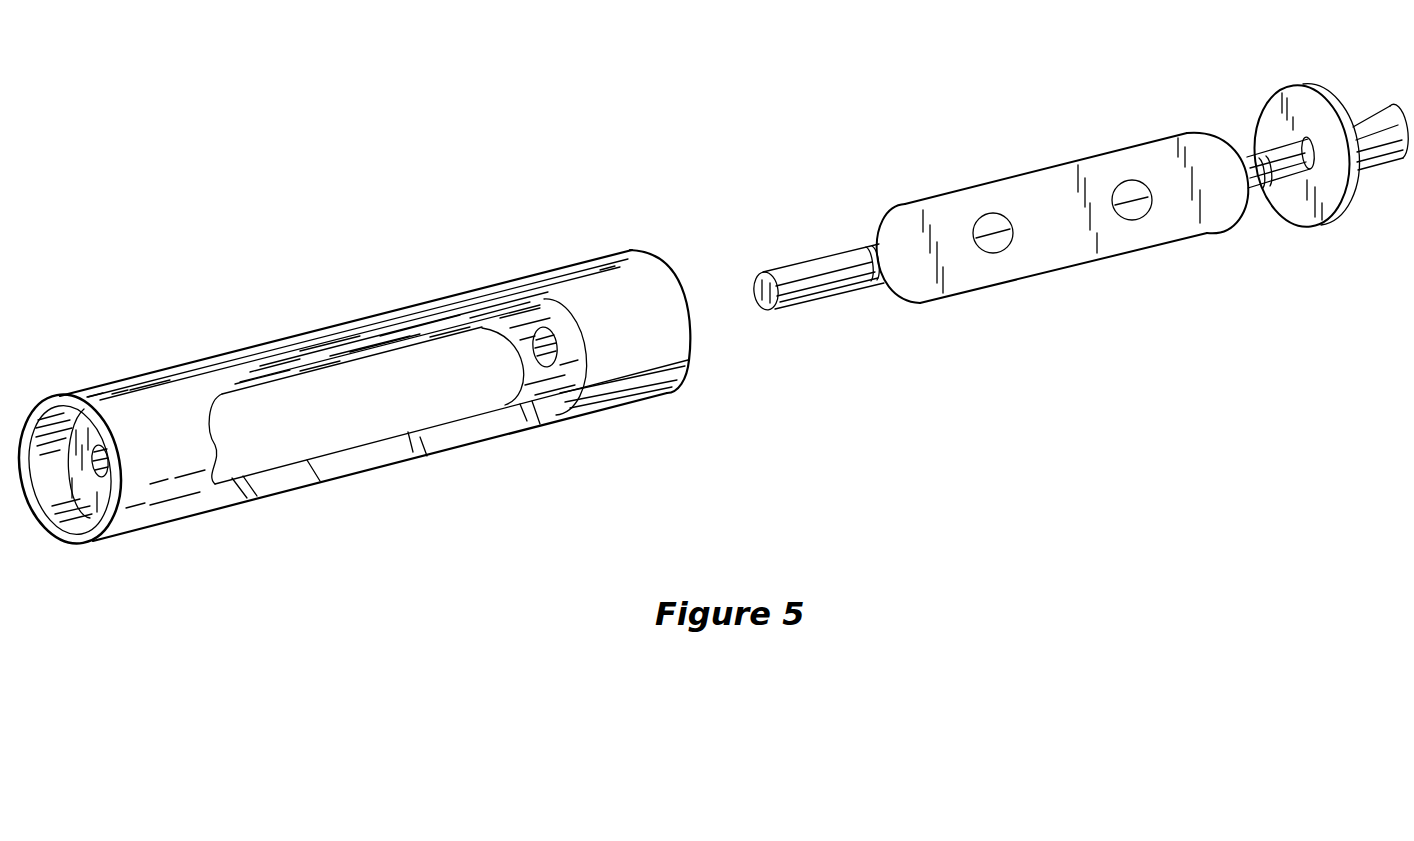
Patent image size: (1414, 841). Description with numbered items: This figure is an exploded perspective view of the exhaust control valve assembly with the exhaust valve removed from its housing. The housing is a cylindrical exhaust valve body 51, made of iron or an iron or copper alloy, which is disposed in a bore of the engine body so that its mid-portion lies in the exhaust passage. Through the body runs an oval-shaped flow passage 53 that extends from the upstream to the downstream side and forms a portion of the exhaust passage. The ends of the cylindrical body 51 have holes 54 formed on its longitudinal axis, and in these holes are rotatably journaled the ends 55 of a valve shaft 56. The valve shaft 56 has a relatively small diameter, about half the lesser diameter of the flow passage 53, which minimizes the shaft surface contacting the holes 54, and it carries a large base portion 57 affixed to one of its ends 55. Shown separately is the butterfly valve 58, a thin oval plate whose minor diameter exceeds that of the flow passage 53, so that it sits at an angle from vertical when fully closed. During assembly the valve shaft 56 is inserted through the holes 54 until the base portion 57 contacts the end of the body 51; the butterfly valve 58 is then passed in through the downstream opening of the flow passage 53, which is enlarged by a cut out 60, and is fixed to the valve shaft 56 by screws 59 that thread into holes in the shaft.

The cylindrical exhaust valve body 51 is at (218, 356).
The flow passage 53 is at (347, 352).
The holes 54 is at (93, 447).
The ends of the valve shaft 55 is at (782, 270).
The valve shaft 56 is at (828, 245).
The base portion 57 is at (1367, 118).
The butterfly valve 58 is at (1026, 170).
The screws 59 is at (1010, 237).
The cut out 60 is at (453, 437).